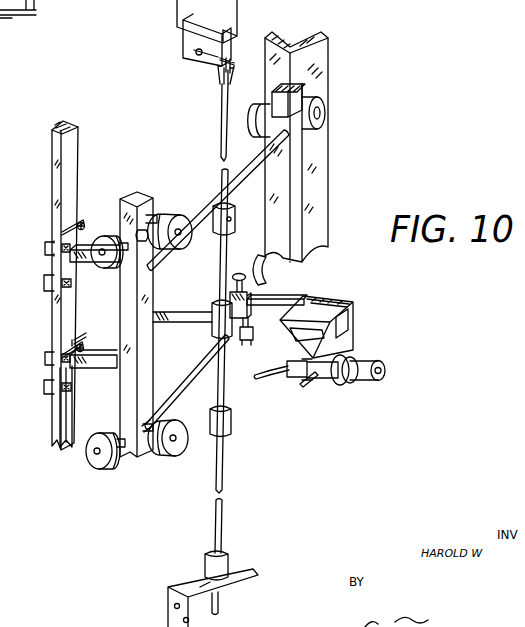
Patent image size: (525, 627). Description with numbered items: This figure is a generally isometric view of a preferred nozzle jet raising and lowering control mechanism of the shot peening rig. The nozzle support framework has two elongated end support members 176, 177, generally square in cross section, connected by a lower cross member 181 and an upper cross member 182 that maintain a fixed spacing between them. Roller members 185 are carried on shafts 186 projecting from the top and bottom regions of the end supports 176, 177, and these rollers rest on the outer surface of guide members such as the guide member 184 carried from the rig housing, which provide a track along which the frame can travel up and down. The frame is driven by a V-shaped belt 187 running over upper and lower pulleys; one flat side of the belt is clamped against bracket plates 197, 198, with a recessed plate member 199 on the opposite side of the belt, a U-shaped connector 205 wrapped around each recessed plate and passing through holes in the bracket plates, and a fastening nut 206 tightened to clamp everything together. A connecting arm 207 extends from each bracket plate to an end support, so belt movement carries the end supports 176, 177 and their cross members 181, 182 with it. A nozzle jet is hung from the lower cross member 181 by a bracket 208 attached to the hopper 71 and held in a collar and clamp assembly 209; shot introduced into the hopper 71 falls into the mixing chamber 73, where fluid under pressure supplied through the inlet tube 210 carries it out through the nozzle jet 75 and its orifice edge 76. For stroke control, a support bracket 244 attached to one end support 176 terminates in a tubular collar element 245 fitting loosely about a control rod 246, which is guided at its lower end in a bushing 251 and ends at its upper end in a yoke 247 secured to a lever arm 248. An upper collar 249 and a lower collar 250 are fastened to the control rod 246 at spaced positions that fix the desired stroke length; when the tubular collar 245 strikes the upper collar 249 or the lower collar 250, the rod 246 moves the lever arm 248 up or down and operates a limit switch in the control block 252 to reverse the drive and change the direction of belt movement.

The hopper 71 is at (354, 335).
The mixing chamber 73 is at (325, 383).
The nozzle jet 75 is at (367, 384).
The edge 76 is at (383, 369).
The end support member 176 is at (142, 183).
The end support member 177 is at (326, 84).
The cross member 181 is at (201, 360).
The cross member 182 is at (203, 221).
The guide member 184 is at (313, 39).
The roller member 185 is at (110, 232).
The shaft 186 is at (177, 212).
The belt 187 is at (58, 147).
The bracket plate 197 is at (64, 230).
The bracket plate 198 is at (62, 343).
The recessed plate member 199 is at (46, 238).
The U-shaped connector 205 is at (47, 280).
The fastening nut 206 is at (80, 338).
The connecting arm 207 is at (97, 373).
The bracket 208 is at (284, 298).
The collar and clamp assembly 209 is at (245, 341).
The inlet tube 210 is at (259, 379).
The support bracket 244 is at (203, 322).
The tubular collar element 245 is at (208, 307).
The control rod 246 is at (226, 464).
The yoke 247 is at (219, 96).
The lever arm 248 is at (228, 66).
The collar 249 is at (217, 237).
The collar 250 is at (235, 427).
The bushing 251 is at (228, 568).
The control block 252 is at (183, 34).